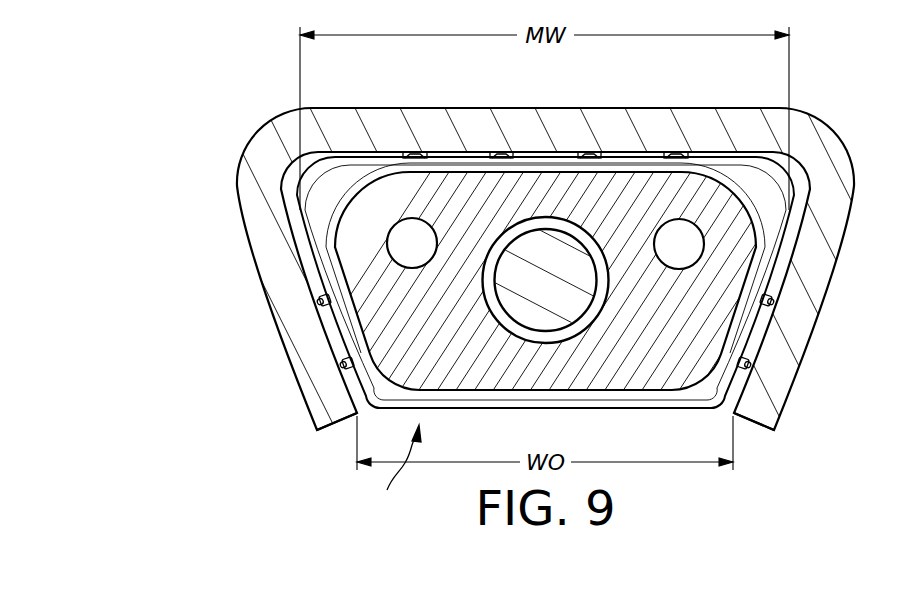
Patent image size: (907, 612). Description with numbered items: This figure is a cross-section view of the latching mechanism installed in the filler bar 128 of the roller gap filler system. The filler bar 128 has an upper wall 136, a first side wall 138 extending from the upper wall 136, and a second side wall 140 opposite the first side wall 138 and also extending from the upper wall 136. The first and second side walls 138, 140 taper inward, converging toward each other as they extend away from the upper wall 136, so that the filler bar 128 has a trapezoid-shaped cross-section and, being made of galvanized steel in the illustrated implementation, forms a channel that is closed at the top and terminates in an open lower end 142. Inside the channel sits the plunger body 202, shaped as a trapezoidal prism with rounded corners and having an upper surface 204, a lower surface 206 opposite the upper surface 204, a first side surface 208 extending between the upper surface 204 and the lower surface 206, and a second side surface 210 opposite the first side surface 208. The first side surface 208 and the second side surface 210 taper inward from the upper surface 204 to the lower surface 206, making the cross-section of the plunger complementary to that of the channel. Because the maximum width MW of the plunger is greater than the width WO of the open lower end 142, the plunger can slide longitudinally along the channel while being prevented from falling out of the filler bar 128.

The filler bar 128 is at (833, 127).
The upper wall 136 is at (651, 118).
The first side wall 138 is at (823, 265).
The second side wall 140 is at (283, 278).
The open lower end 142 is at (393, 475).
The plunger body 202 is at (712, 332).
The upper surface 204 is at (452, 150).
The lower surface 206 is at (600, 410).
The first side surface 208 is at (762, 327).
The second side surface 210 is at (328, 327).